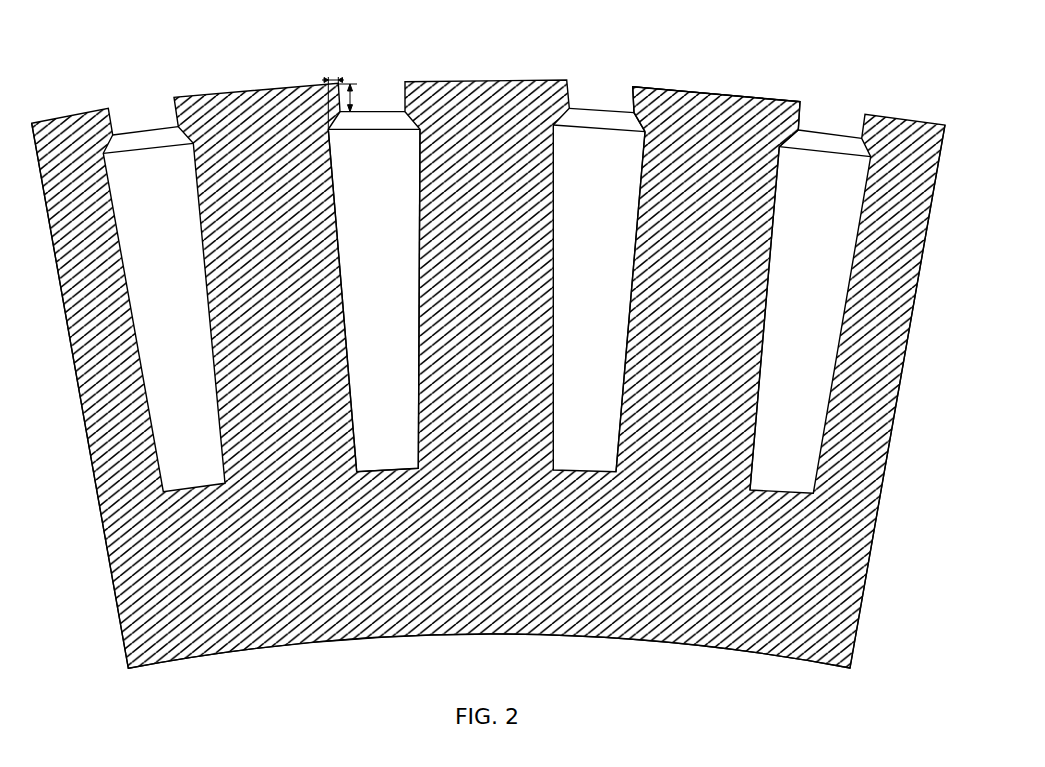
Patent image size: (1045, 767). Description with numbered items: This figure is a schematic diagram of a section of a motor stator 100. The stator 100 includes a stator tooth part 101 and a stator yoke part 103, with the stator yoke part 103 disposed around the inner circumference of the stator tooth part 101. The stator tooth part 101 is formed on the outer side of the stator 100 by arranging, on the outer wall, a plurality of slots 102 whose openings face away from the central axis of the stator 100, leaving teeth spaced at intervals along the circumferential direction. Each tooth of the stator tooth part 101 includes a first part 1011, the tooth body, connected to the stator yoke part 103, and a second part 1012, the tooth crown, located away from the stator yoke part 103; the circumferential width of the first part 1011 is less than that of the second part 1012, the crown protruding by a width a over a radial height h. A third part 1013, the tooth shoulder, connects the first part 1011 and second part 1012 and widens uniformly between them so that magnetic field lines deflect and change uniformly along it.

The stator 100 is at (239, 32).
The stator tooth part 101 is at (660, 250).
The first part 1011 is at (642, 170).
The second part 1012 is at (635, 95).
The third part 1013 is at (637, 115).
The slot 102 is at (363, 127).
The stator yoke part 103 is at (818, 600).